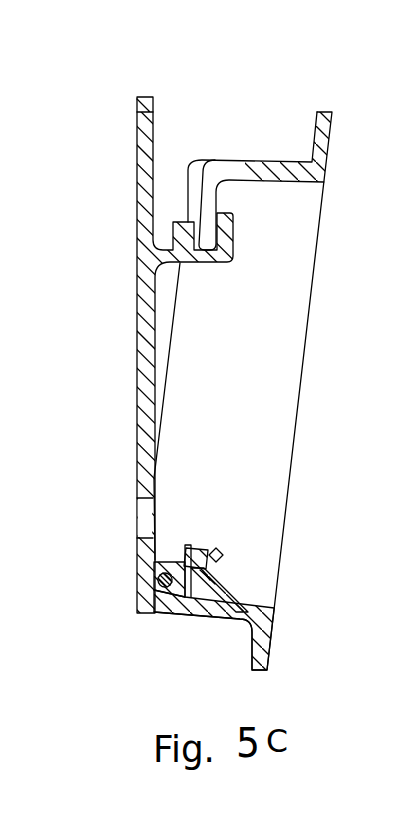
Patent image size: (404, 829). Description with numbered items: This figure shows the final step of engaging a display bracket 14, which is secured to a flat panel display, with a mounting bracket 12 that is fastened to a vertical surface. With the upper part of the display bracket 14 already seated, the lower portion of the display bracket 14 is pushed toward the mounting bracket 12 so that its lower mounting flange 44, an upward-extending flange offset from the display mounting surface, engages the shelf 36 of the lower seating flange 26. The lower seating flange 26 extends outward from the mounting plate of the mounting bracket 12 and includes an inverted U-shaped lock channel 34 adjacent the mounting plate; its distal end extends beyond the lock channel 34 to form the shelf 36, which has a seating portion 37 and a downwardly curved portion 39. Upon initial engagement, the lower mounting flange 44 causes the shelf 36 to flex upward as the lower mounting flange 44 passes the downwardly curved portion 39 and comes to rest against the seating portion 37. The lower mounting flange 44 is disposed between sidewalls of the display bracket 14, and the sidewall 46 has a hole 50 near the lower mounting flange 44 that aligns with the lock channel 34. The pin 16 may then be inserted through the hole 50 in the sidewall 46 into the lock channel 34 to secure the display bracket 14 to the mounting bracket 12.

The mounting bracket 12 is at (147, 95).
The display bracket 14 is at (328, 110).
The pin 16 is at (176, 598).
The lower seating flange 26 is at (181, 556).
The lock channel 34 is at (155, 562).
The shelf 36 is at (209, 548).
The seating portion 37 is at (222, 550).
The downwardly curved portion 39 is at (197, 570).
The lower mounting flange 44 is at (204, 572).
The sidewall 46 is at (180, 385).
The hole 50 is at (157, 580).